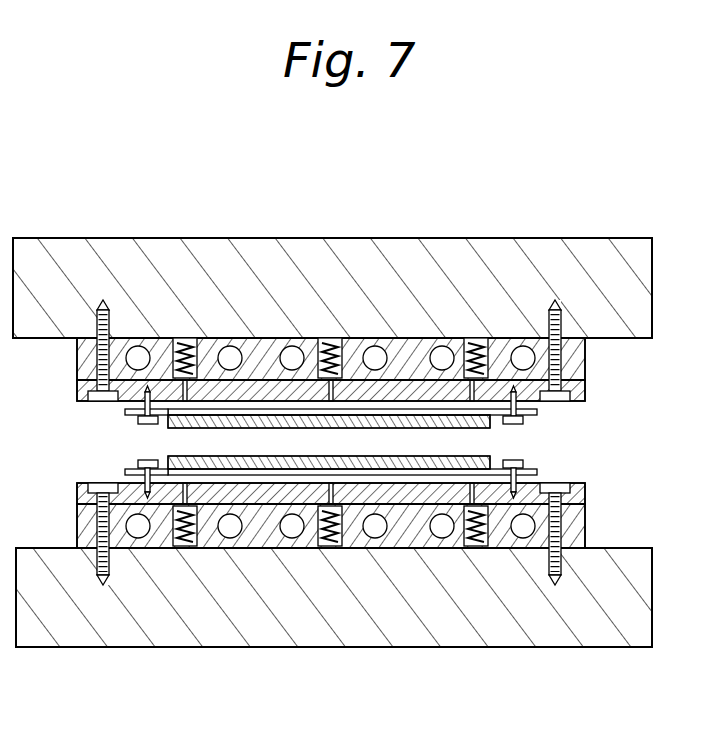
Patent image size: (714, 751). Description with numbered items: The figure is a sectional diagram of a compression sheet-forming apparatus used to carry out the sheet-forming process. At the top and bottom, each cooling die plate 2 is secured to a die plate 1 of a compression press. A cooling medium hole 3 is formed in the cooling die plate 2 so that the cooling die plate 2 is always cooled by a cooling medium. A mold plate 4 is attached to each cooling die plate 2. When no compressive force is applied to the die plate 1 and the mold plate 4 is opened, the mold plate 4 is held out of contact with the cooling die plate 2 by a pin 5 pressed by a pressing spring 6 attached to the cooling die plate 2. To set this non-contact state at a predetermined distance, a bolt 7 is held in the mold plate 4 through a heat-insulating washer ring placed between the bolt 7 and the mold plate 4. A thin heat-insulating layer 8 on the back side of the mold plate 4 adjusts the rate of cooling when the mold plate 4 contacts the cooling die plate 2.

The die plate 1 is at (643, 272).
The cooling die plate 2 is at (582, 352).
The cooling medium hole 3 is at (144, 346).
The mold plate 4 is at (490, 430).
The pin 5 is at (197, 408).
The pressing spring 6 is at (333, 340).
The bolt 7 is at (525, 425).
The thin heat-insulating layer 8 is at (128, 477).